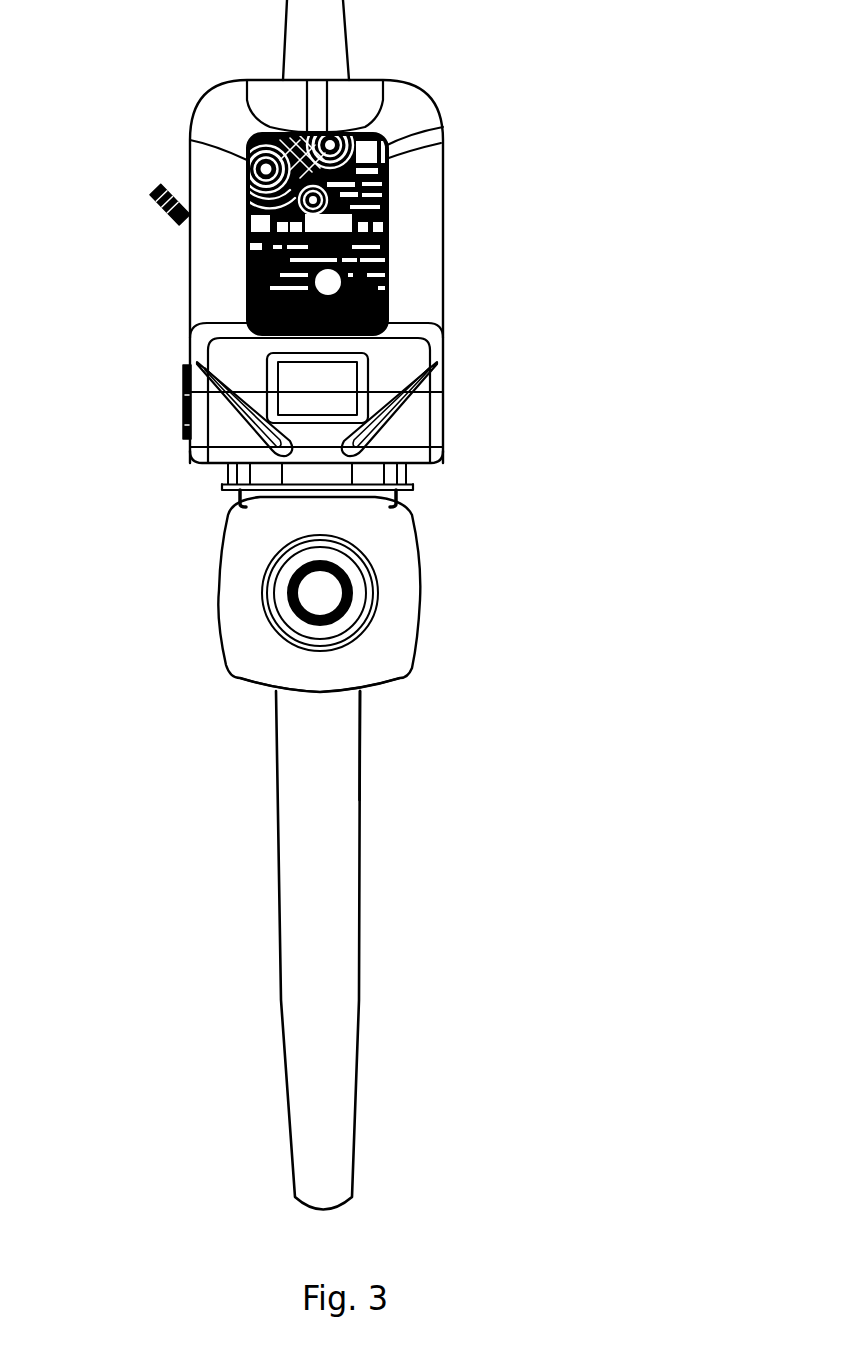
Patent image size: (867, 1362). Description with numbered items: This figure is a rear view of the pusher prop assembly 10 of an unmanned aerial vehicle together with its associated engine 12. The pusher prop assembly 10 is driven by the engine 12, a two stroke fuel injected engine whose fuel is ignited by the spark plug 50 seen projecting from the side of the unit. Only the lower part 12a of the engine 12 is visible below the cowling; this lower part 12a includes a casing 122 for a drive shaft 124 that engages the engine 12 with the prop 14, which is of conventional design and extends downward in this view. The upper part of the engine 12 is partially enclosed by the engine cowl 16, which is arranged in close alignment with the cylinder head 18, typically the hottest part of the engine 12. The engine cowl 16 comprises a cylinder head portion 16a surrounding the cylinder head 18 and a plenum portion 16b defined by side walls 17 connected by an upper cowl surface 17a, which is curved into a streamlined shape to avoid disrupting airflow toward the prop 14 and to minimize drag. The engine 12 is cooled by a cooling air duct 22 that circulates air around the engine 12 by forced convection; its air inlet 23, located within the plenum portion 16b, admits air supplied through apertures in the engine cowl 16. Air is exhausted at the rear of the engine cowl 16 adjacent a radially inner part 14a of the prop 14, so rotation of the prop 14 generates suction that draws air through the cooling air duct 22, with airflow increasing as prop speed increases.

The pusher prop assembly 10 is at (413, 642).
The engine 12 is at (225, 497).
The lower part of engine 12a is at (407, 496).
The prop 14 is at (323, 863).
The radially inner part of the prop 14a is at (330, 730).
The engine cowl 16 is at (444, 283).
The cylinder head portion 16a is at (444, 395).
The plenum portion 16b is at (443, 122).
The side walls 17 is at (250, 300).
The upper cowl surface 17a is at (383, 79).
The cylinder head 18 is at (388, 295).
The cooling air duct 22 is at (385, 222).
The air inlet 23 is at (253, 225).
The spark plug 50 is at (153, 187).
The casing 122 is at (257, 658).
The drive shaft 124 is at (325, 592).